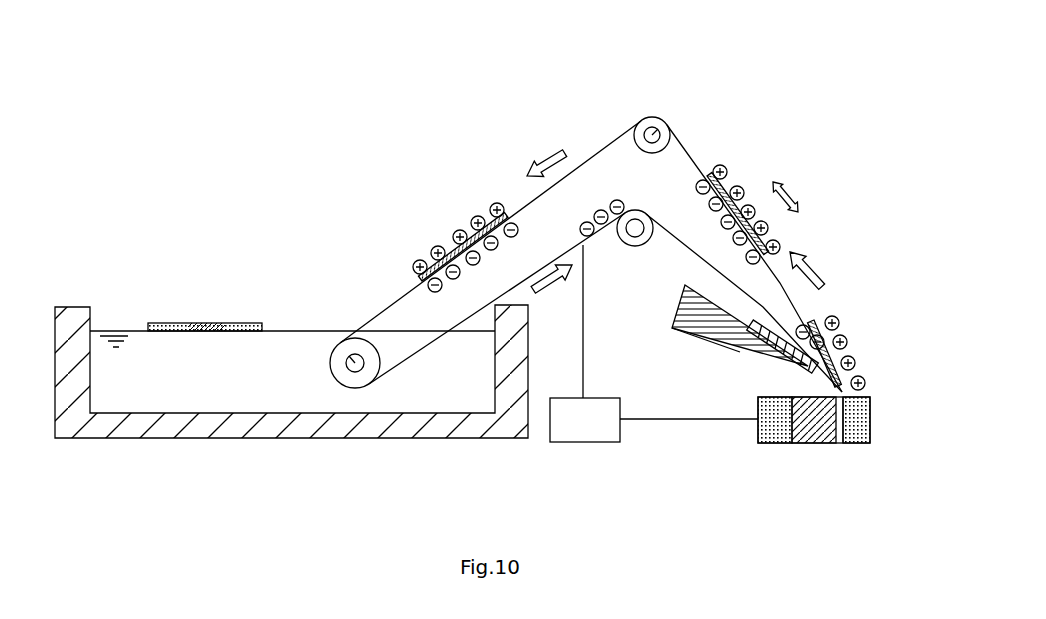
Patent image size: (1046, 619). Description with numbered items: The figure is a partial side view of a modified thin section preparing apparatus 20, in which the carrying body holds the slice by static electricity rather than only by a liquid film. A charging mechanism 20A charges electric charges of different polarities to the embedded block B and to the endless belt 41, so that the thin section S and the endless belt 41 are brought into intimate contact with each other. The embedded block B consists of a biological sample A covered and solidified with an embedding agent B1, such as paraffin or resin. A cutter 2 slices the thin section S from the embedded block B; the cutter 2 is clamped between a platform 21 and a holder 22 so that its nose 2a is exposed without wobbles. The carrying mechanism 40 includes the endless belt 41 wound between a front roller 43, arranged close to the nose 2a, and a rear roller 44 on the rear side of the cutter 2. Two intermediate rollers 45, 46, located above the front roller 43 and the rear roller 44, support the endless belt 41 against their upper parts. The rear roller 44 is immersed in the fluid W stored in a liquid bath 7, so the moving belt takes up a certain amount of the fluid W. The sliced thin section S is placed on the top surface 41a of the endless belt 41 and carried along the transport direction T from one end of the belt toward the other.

The liquid bath 7 is at (86, 312).
The fluid W is at (286, 330).
The thin section S is at (175, 320).
The thin section preparing apparatus 20 is at (784, 86).
The carrying mechanism 40 is at (655, 112).
The endless belt 41 is at (611, 136).
The top surface 41a is at (819, 302).
The front roller 43 is at (843, 334).
The rear roller 44 is at (354, 362).
The intermediate roller 45 is at (656, 133).
The intermediate roller 46 is at (636, 230).
The transport direction T is at (787, 196).
The biological sample A is at (745, 201).
The embedded block B is at (775, 452).
The embedding agent B1 is at (770, 233).
The charging mechanism 20A is at (583, 443).
The platform 21 is at (672, 315).
The holder 22 is at (770, 330).
The cutter 2 is at (800, 372).
The nose 2a is at (840, 446).